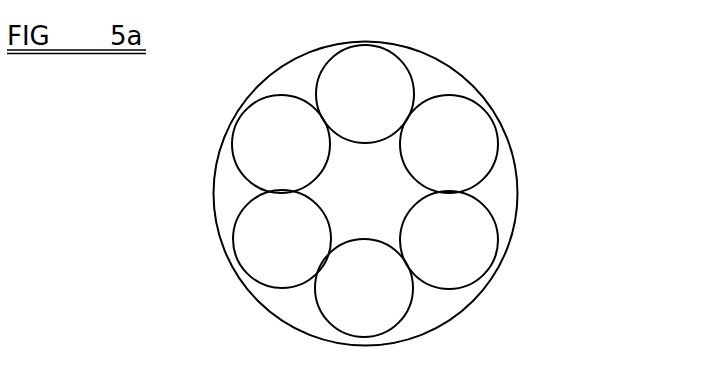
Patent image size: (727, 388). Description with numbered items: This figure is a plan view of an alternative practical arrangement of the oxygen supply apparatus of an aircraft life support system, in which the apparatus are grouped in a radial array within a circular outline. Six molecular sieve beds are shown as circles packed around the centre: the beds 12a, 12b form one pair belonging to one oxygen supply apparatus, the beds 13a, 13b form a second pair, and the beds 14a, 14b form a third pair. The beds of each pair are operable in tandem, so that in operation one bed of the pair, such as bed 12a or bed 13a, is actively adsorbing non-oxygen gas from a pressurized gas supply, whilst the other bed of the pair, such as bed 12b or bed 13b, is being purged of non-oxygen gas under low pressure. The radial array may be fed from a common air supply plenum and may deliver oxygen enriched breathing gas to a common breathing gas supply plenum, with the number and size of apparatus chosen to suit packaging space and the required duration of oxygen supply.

The molecular sieve bed 12a is at (363, 78).
The molecular sieve bed 12b is at (485, 132).
The molecular sieve bed 13a is at (471, 250).
The molecular sieve bed 13b is at (375, 308).
The molecular sieve bed 14a is at (270, 245).
The molecular sieve bed 14b is at (255, 130).